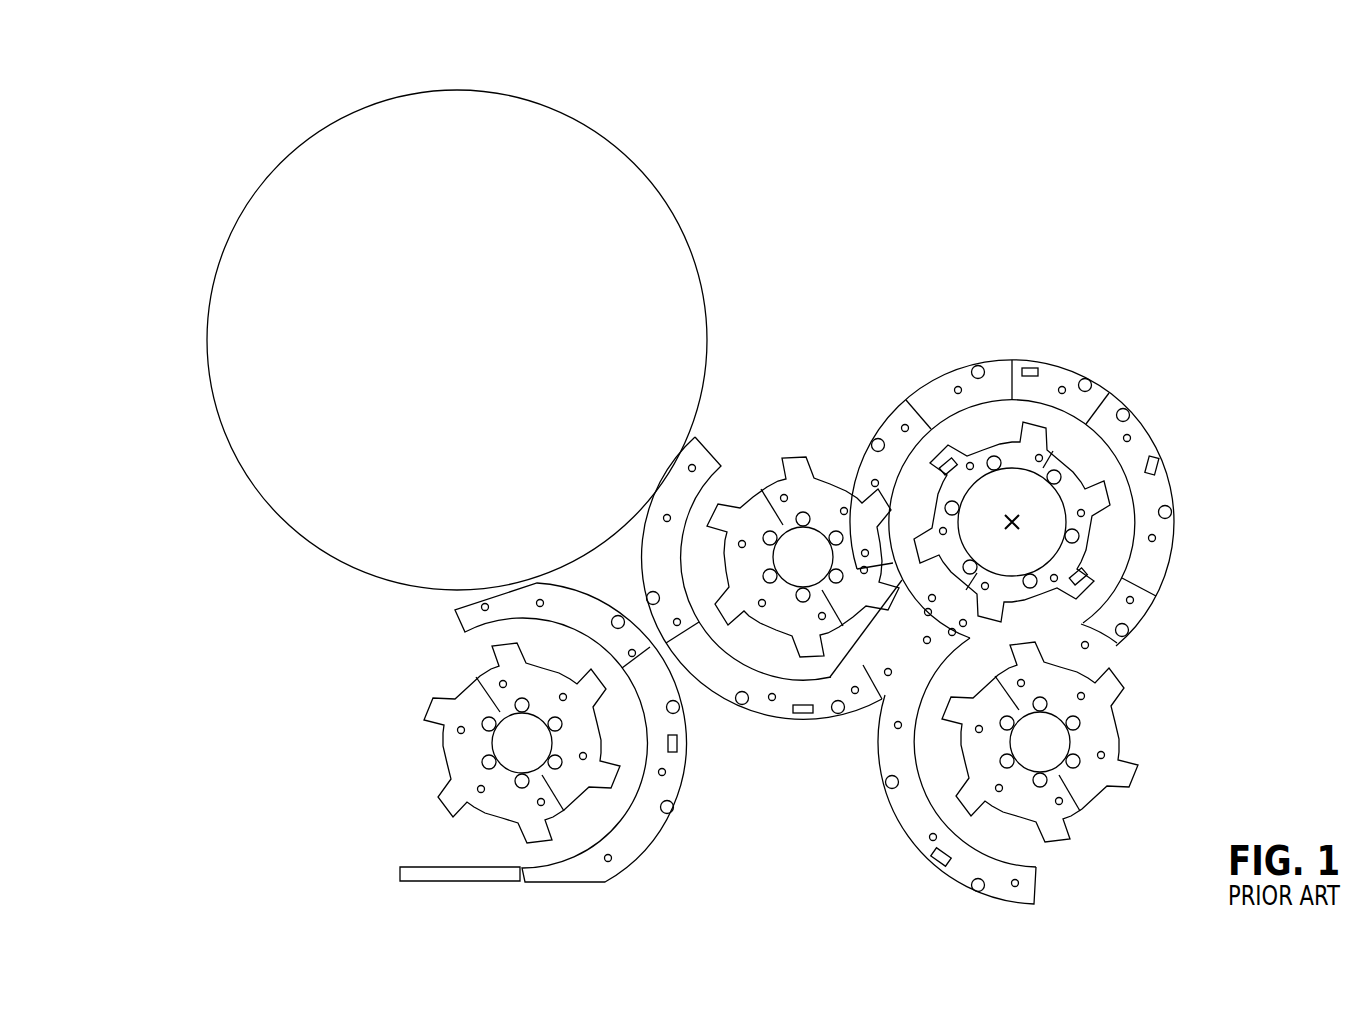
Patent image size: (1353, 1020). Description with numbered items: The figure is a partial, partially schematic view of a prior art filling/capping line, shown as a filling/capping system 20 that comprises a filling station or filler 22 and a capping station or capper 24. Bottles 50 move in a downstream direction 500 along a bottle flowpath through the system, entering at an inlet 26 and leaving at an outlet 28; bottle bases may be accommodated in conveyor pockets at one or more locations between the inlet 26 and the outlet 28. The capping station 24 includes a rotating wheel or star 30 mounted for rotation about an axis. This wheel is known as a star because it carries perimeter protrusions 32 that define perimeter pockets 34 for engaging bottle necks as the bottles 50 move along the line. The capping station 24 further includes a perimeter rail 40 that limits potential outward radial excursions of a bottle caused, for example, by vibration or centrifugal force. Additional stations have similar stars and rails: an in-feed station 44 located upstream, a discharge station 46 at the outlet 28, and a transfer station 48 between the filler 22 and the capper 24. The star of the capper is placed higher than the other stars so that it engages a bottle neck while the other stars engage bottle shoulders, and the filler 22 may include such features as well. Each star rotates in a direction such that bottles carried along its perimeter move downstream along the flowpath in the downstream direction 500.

The filling/capping system 20 is at (1114, 192).
The filling station 22 is at (693, 189).
The capping station 24 is at (1070, 595).
The inlet 26 is at (370, 863).
The outlet 28 is at (1137, 846).
The rotating wheel or star 30 is at (1074, 506).
The perimeter protrusions 32 is at (1118, 483).
The perimeter pockets 34 is at (1108, 514).
The perimeter rail 40 is at (1056, 374).
The in-feed station 44 is at (634, 885).
The discharge station 46 is at (955, 893).
The transfer station 48 is at (806, 448).
The bottles 50 is at (1010, 515).
The downstream direction 500 is at (730, 355).